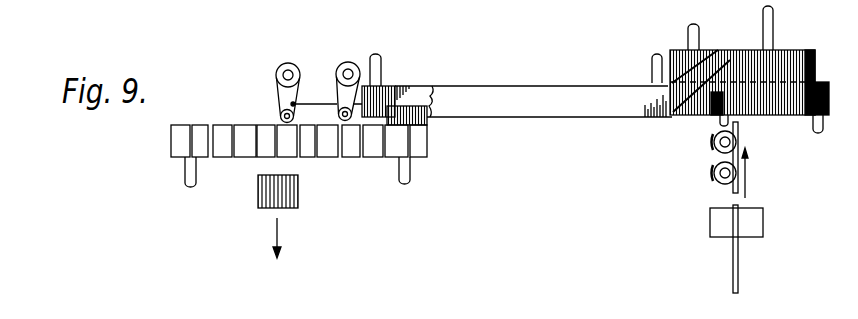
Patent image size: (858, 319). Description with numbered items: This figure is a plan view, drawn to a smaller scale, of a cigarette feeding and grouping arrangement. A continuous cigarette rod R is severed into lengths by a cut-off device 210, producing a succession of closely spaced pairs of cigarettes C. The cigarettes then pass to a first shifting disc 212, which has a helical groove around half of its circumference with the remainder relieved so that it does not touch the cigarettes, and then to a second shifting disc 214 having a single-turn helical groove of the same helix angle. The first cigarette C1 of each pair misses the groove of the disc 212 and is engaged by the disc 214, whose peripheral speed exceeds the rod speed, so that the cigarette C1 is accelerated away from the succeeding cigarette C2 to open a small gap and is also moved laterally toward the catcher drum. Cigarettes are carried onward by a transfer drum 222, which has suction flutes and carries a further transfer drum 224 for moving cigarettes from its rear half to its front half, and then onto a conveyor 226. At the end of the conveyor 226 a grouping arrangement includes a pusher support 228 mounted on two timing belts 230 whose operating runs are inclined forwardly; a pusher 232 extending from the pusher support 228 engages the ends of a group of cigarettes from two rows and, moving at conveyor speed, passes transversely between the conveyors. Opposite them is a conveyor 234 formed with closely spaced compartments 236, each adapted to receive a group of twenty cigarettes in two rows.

The cut-off device 210 is at (757, 226).
The first shifting disc 212 is at (712, 173).
The second shifting disc 214 is at (712, 142).
The transfer drum 222 is at (667, 55).
The transfer drum 224 is at (732, 58).
The conveyor 226 is at (580, 88).
The pusher support 228 is at (310, 100).
The timing belts 230 is at (277, 98).
The pusher 232 is at (418, 90).
The conveyor 234 is at (210, 151).
The compartments 236 is at (220, 158).
The first cigarette C1 is at (739, 133).
The succeeding cigarette C2 is at (733, 192).
The cigarettes C is at (737, 218).
The cigarette rod R is at (733, 266).